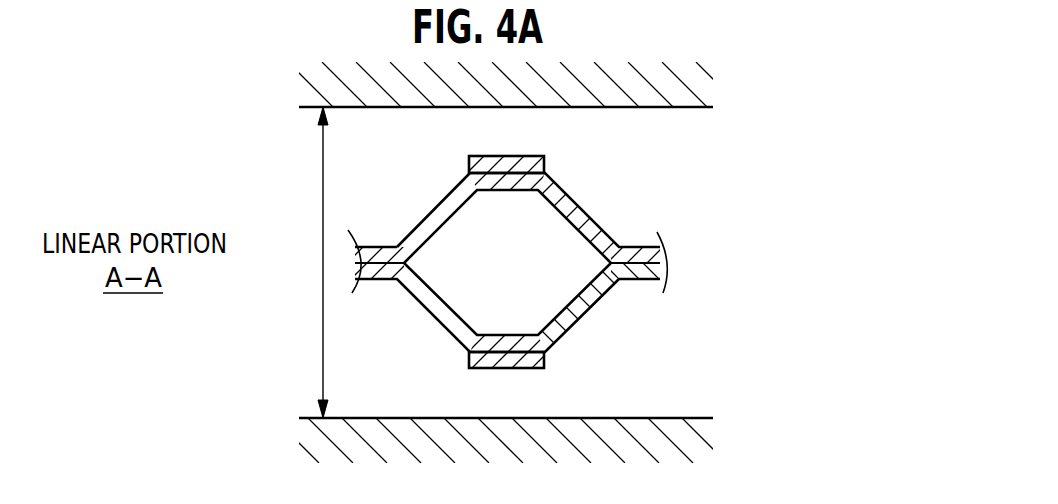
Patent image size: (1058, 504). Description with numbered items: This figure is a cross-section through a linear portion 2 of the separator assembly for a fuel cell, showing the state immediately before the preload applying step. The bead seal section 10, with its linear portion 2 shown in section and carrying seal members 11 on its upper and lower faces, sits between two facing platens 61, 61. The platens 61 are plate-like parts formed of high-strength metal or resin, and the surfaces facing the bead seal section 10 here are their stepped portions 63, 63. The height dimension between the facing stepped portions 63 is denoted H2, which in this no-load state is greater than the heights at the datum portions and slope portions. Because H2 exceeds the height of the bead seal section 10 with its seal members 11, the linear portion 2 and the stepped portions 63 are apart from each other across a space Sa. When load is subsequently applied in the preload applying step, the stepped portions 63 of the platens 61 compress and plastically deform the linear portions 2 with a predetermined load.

The platen 61 is at (678, 85).
The stepped portion 63 is at (657, 107).
The height dimension between the stepped portions H2 is at (305, 262).
The bead seal section 10 is at (521, 250).
The linear portion 2 is at (521, 250).
The seal member 11 is at (468, 164).
The space Sa is at (542, 135).